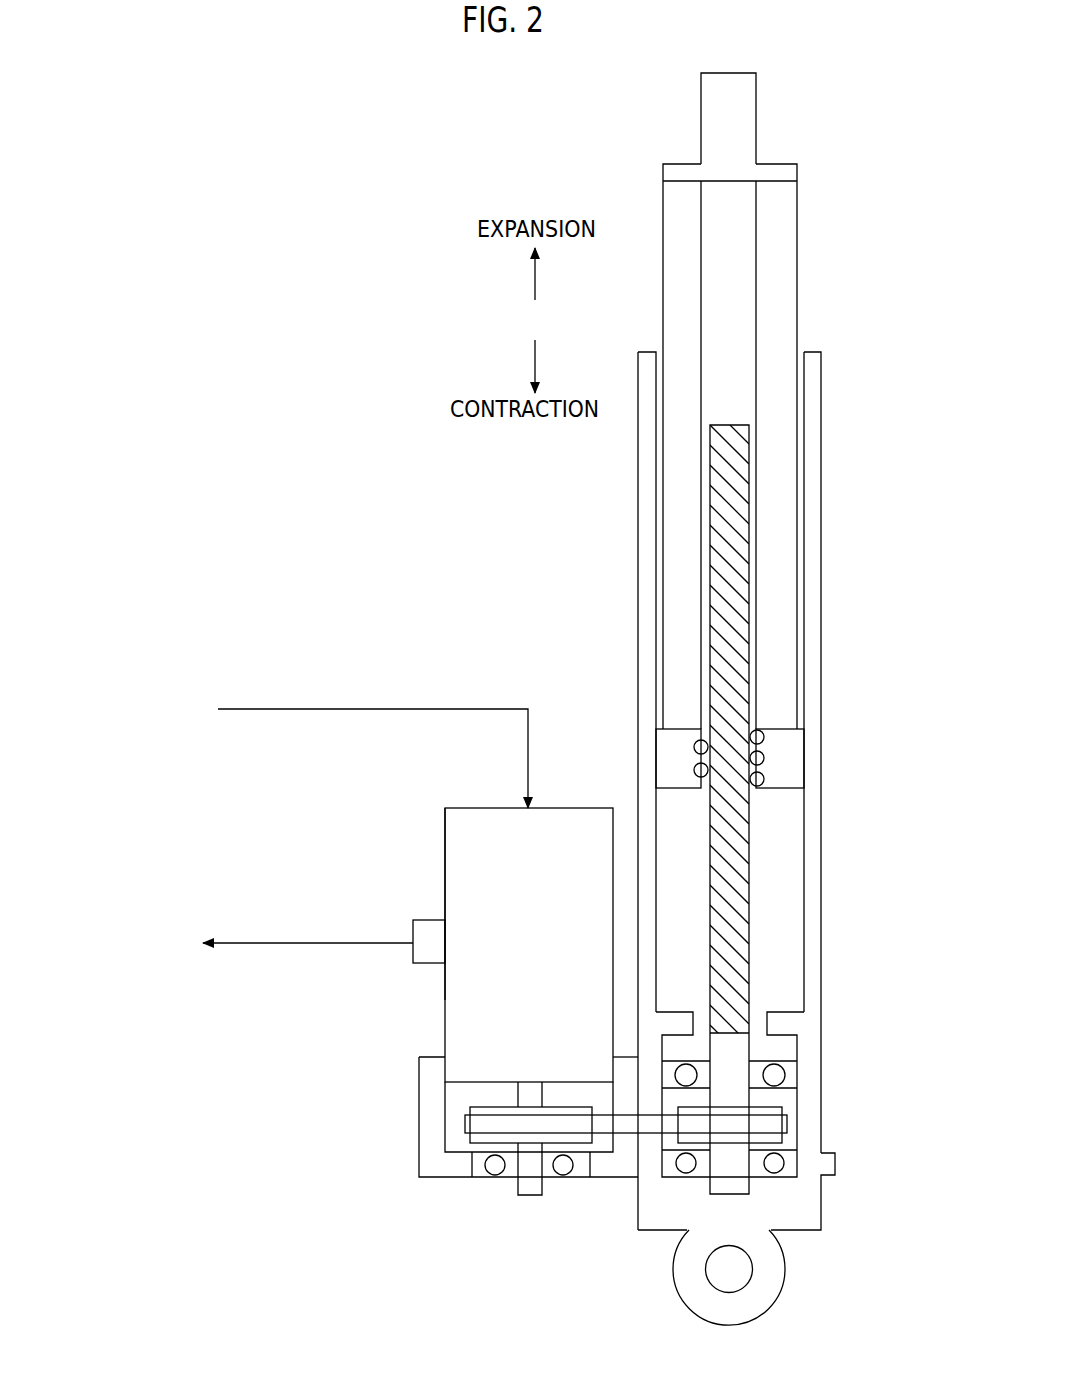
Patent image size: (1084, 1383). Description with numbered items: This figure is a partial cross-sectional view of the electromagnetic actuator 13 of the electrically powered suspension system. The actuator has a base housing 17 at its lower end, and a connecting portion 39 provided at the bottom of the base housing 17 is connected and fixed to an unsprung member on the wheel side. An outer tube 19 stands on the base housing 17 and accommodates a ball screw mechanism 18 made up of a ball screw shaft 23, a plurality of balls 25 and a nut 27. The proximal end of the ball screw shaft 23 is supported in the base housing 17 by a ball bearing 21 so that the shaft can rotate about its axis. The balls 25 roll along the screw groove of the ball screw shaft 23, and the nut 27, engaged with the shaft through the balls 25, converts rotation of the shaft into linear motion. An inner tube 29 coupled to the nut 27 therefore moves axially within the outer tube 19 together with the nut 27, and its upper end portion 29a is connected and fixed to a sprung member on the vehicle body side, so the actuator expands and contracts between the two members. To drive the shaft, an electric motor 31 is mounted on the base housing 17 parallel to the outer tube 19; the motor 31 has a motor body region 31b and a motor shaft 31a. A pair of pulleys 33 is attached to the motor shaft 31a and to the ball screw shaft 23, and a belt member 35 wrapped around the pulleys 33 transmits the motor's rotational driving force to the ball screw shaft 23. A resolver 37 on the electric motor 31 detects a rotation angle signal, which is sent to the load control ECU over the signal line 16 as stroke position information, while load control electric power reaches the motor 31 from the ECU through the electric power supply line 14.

The electromagnetic actuator 13 is at (850, 186).
The electric power supply line 14 is at (365, 709).
The signal line 16 is at (302, 940).
The base housing 17 is at (808, 1110).
The ball screw mechanism 18 is at (809, 789).
The outer tube 19 is at (810, 408).
The ball bearing 21 is at (778, 1078).
The ball screw shaft 23 is at (752, 840).
The balls 25 is at (765, 779).
The nut 27 is at (680, 742).
The inner tube 29 is at (780, 265).
The upper end portion 29a is at (738, 118).
The electric motor 31 is at (558, 835).
The motor shaft 31a is at (530, 1193).
The motor body 31b is at (458, 840).
The pulleys 33 is at (470, 1137).
The belt member 35 is at (634, 1135).
The resolver 37 is at (430, 930).
The connecting portion 39 is at (777, 1270).